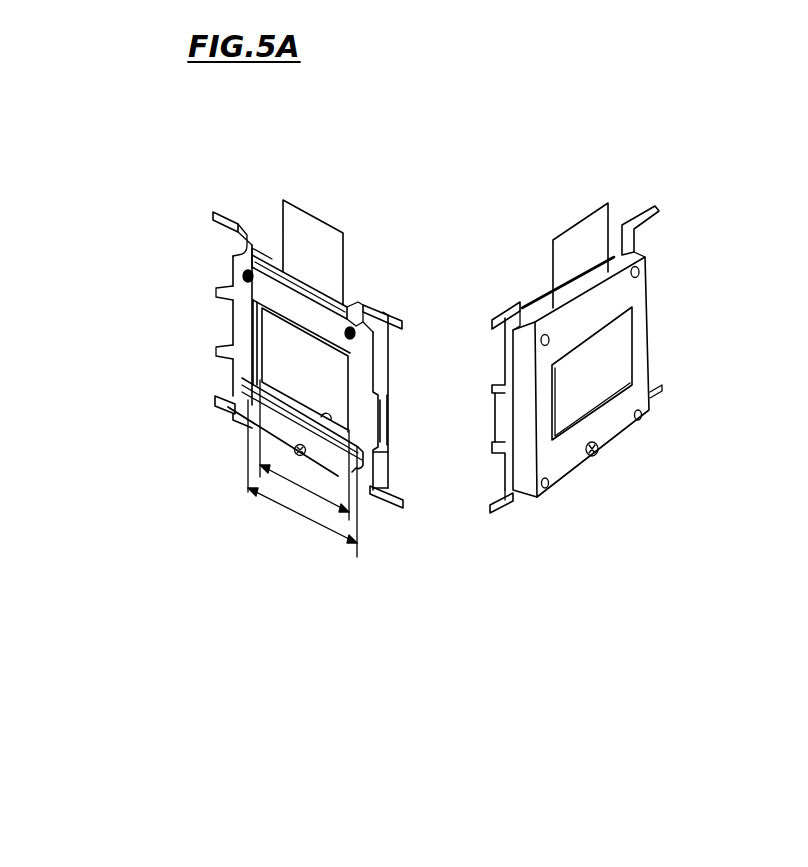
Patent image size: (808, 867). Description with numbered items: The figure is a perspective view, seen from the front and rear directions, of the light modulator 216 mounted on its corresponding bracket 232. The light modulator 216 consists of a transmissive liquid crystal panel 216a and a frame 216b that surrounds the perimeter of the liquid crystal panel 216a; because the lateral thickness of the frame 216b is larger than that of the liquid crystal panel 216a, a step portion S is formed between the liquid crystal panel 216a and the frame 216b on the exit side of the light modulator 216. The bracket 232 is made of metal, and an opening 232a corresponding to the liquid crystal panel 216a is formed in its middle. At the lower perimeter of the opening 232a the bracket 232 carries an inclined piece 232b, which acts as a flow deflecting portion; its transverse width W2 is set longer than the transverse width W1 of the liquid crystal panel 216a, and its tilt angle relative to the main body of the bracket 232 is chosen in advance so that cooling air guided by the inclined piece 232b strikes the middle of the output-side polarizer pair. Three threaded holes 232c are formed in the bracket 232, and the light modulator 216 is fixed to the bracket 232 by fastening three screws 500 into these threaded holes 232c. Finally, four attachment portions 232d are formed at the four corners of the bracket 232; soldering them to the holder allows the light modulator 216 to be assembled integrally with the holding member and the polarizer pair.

The bracket 232 is at (287, 270).
The opening 232a is at (253, 326).
The inclined piece 232b is at (288, 423).
The threaded holes 232c is at (351, 325).
The attachment portions 232d is at (231, 222).
The light modulator 216 is at (389, 368).
The liquid crystal panel 216a is at (282, 357).
The frame 216b is at (388, 415).
The screws 500 is at (645, 255).
The transverse width of the liquid crystal panel W1 is at (293, 484).
The transverse width of the inclined piece W2 is at (301, 523).
The step portion S is at (326, 422).